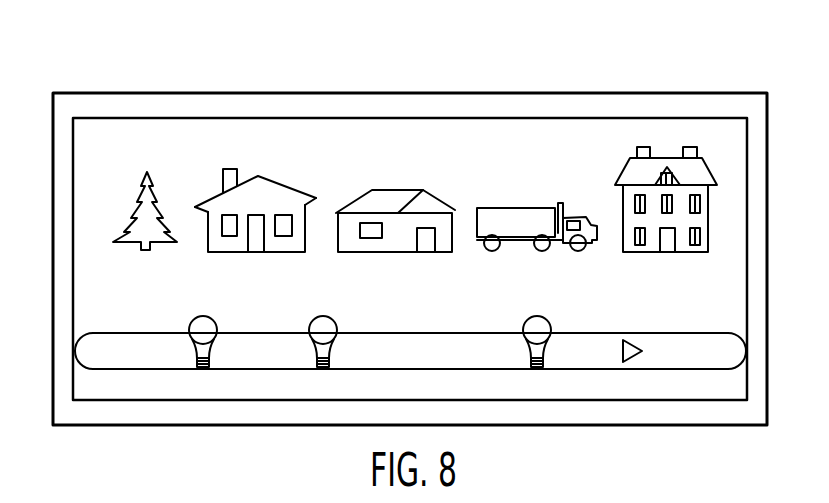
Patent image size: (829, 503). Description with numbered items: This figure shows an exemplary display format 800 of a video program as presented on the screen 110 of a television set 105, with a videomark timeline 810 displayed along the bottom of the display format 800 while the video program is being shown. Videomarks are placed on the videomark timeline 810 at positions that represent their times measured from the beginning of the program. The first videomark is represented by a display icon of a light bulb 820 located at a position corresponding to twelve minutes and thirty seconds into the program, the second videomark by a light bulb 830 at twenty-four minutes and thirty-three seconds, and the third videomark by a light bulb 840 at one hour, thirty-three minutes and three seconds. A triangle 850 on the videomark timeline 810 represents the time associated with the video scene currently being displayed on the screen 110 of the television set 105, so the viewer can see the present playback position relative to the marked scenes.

The television set 105 is at (742, 93).
The screen 110 is at (676, 118).
The display format 800 is at (602, 128).
The videomark timeline 810 is at (405, 333).
The light bulb 820 is at (205, 316).
The light bulb 830 is at (325, 316).
The light bulb 840 is at (540, 316).
The triangle 850 is at (630, 337).